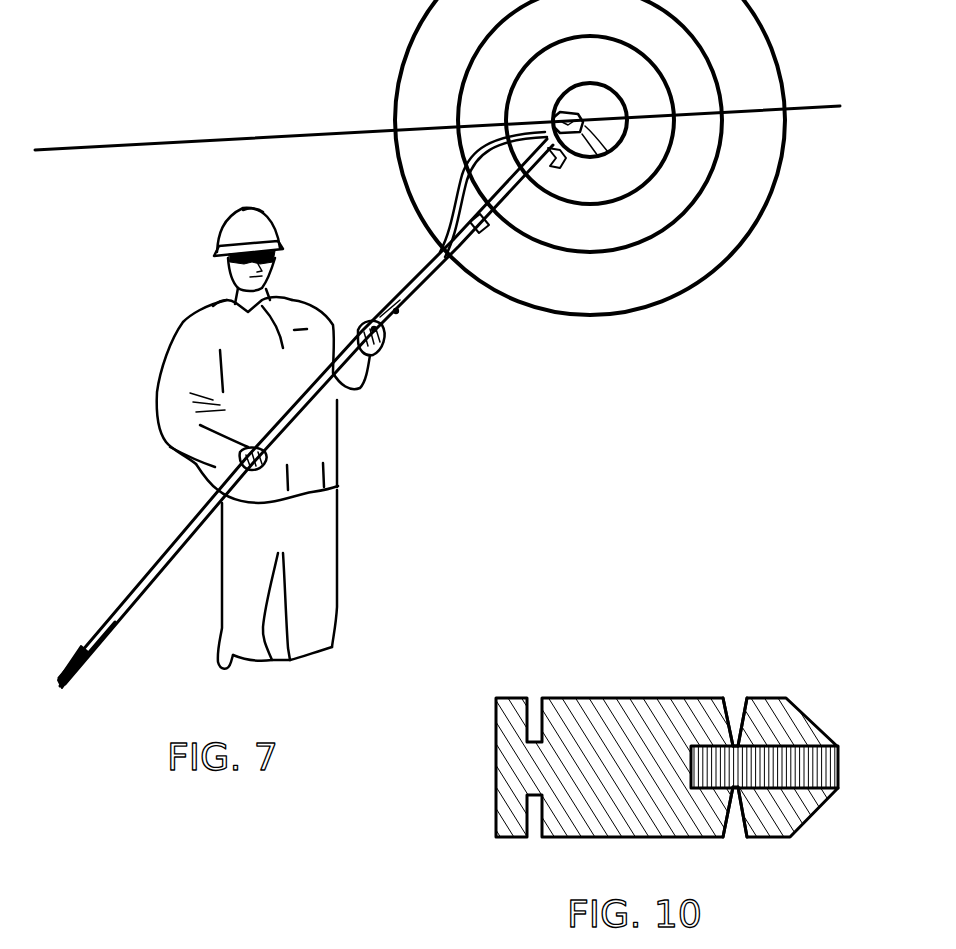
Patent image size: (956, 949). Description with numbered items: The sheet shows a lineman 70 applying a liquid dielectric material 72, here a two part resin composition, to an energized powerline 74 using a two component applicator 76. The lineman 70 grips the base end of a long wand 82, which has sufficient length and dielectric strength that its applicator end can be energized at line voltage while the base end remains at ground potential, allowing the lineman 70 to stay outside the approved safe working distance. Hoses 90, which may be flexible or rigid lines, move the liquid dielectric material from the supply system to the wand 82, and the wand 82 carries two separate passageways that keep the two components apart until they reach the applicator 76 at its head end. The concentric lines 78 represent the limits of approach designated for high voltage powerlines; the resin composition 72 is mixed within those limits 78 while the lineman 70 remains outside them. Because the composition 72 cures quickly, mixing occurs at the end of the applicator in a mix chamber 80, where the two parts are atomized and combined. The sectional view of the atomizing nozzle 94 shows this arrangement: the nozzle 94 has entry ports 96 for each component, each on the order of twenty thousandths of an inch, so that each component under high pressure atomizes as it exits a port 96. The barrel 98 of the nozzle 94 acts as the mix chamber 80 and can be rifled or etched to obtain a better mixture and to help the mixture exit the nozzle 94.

In FIG. 7, the lineman 70 is at (182, 332).
In FIG. 7, the liquid dielectric material 72 is at (592, 96).
In FIG. 7, the powerline 74 is at (330, 128).
In FIG. 7, the applicator 76 is at (524, 125).
In FIG. 7, the lines 78 is at (760, 216).
In FIG. 7, the mix chamber 80 is at (600, 148).
In FIG. 7, the wand 82 is at (430, 282).
In FIG. 7, the hoses 90 is at (56, 688).
In FIG. 7, the atomizing nozzle 94 is at (586, 112).
In FIG. 10, the atomizing nozzle 94 is at (612, 698).
In FIG. 10, the entry ports 96 is at (744, 698).
In FIG. 10, the barrel 98 is at (840, 746).